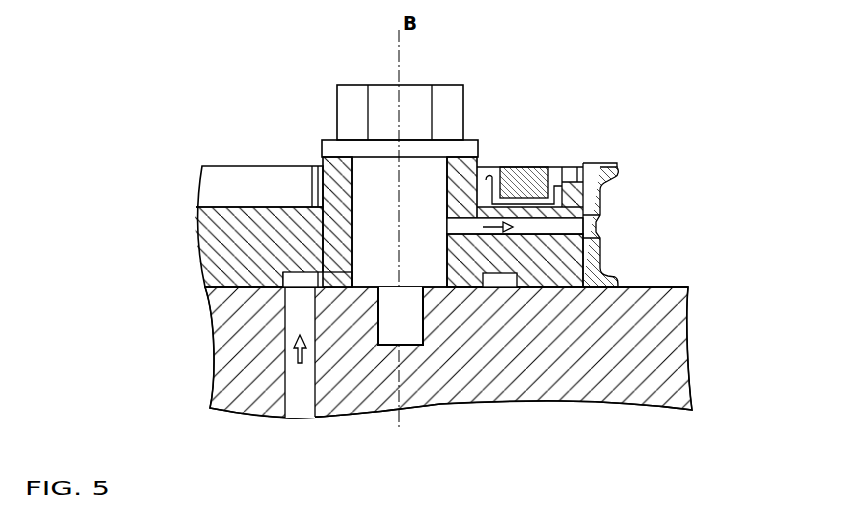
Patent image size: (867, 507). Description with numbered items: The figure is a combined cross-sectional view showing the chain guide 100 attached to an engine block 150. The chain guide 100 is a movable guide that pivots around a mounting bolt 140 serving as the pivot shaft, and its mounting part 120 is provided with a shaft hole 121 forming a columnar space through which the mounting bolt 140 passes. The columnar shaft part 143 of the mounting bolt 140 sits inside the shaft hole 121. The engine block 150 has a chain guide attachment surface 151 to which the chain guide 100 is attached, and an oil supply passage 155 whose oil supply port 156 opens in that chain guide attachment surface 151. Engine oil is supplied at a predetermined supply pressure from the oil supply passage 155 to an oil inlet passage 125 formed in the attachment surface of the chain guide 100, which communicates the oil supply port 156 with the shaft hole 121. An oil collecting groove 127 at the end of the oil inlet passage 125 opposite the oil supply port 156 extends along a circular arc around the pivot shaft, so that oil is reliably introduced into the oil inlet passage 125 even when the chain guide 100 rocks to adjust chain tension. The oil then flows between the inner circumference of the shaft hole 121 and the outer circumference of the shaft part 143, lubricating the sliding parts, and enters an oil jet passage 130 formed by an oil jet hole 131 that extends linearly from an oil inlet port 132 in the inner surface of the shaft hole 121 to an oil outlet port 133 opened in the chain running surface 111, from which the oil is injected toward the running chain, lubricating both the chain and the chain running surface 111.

The chain guide 100 is at (195, 183).
The chain running surface 111 is at (603, 195).
The mounting part 120 is at (318, 176).
The shaft hole 121 is at (353, 197).
The oil inlet passage 125 is at (298, 270).
The oil collecting groove 127 is at (283, 281).
The oil jet passage 130 is at (550, 165).
The oil jet hole 131 is at (565, 228).
The oil inlet port 132 is at (448, 226).
The oil outlet port 133 is at (600, 228).
The mounting bolt 140 is at (444, 83).
The shaft part 143 is at (538, 214).
The engine block 150 is at (686, 342).
The chain guide attachment surface 151 is at (660, 283).
The oil supply passage 155 is at (297, 402).
The oil supply port 156 is at (297, 288).